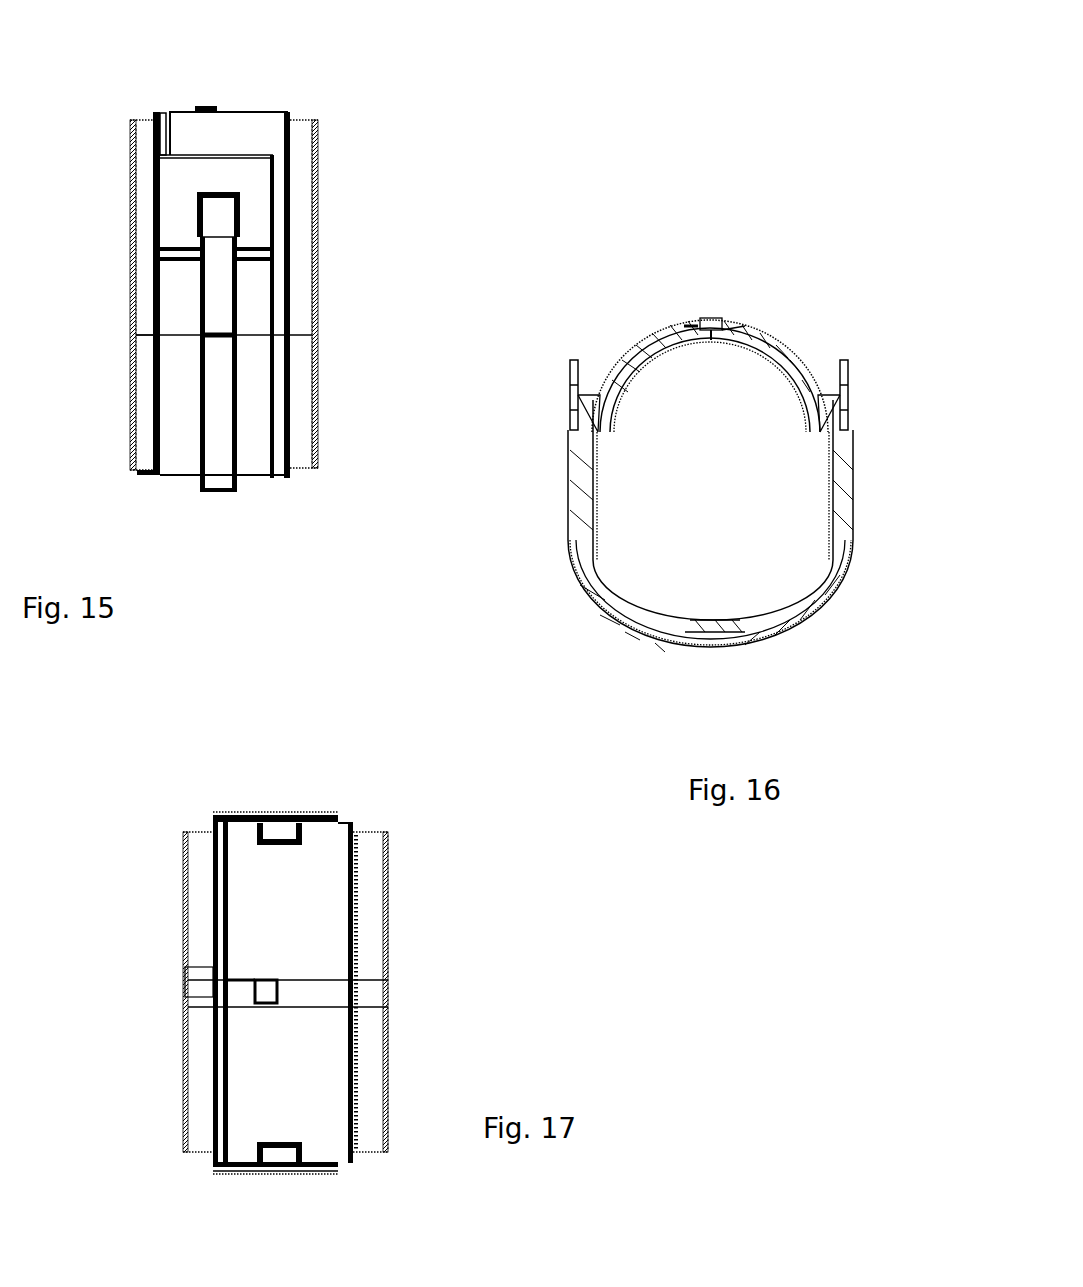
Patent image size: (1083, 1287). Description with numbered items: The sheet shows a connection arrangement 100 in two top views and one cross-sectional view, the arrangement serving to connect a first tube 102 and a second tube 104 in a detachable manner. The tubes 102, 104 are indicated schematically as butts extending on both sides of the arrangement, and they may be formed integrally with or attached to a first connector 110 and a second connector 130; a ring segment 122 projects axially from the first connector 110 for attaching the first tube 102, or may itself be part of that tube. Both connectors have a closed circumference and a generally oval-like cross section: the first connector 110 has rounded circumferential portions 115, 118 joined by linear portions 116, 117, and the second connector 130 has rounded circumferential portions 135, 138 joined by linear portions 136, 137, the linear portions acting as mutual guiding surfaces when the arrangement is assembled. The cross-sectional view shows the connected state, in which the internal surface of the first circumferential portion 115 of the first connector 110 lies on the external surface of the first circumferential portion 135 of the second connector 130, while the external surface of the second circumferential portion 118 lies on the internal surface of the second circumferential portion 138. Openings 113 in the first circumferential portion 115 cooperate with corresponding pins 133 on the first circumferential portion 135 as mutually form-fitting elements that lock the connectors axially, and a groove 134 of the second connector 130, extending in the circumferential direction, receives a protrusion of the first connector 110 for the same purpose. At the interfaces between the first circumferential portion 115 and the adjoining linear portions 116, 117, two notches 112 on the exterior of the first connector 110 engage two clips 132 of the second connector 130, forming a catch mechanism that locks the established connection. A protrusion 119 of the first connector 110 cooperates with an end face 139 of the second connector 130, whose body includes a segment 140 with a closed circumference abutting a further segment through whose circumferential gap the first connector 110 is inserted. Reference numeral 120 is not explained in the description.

In FIG. 15, the connection arrangement 100 is at (196, 84).
In FIG. 16, the connection arrangement 100 is at (736, 202).
In FIG. 17, the connection arrangement 100 is at (292, 758).
In FIG. 15, the first tube 102 is at (318, 415).
In FIG. 17, the first tube 102 is at (395, 1085).
In FIG. 15, the second tube 104 is at (135, 405).
In FIG. 17, the second tube 104 is at (183, 1135).
In FIG. 15, the first connector 110 is at (267, 133).
In FIG. 16, the first connector 110 is at (645, 327).
In FIG. 17, the first connector 110 is at (233, 844).
In FIG. 15, the notches 112 is at (237, 217).
In FIG. 16, the notches 112 is at (576, 420).
In FIG. 17, the notches 112 is at (278, 835).
In FIG. 16, the openings 113 is at (693, 322).
In FIG. 17, the openings 113 is at (255, 995).
In FIG. 16, the first circumferential portion 115 is at (738, 328).
In FIG. 16, the linear portion 116 is at (835, 465).
In FIG. 16, the linear portion 117 is at (598, 470).
In FIG. 16, the second circumferential portion 118 is at (630, 630).
In FIG. 15, the protrusion 119 is at (295, 485).
In FIG. 15, the outer rail 120 is at (135, 170).
In FIG. 15, the ring segment 122 is at (287, 170).
In FIG. 17, the ring segment 122 is at (392, 905).
In FIG. 15, the second connector 130 is at (195, 455).
In FIG. 16, the second connector 130 is at (728, 655).
In FIG. 15, the clips 132 is at (220, 185).
In FIG. 16, the clips 132 is at (572, 375).
In FIG. 17, the clips 132 is at (310, 820).
In FIG. 16, the pins 133 is at (717, 318).
In FIG. 17, the pins 133 is at (265, 985).
In FIG. 15, the groove 134 is at (220, 505).
In FIG. 16, the first circumferential portion 135 is at (715, 330).
In FIG. 16, the linear portion 136 is at (850, 500).
In FIG. 15, the linear portion 137 is at (232, 300).
In FIG. 16, the linear portion 137 is at (575, 500).
In FIG. 16, the second circumferential portion 138 is at (685, 620).
In FIG. 15, the end face 139 is at (285, 490).
In FIG. 15, the segment 140 is at (140, 292).